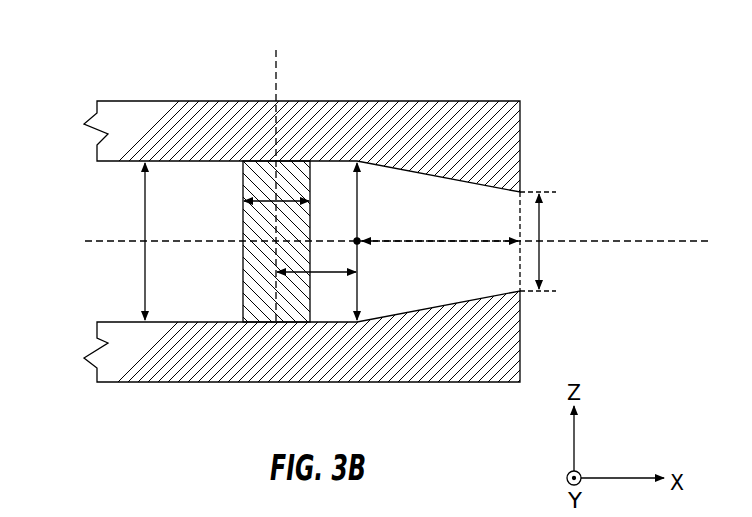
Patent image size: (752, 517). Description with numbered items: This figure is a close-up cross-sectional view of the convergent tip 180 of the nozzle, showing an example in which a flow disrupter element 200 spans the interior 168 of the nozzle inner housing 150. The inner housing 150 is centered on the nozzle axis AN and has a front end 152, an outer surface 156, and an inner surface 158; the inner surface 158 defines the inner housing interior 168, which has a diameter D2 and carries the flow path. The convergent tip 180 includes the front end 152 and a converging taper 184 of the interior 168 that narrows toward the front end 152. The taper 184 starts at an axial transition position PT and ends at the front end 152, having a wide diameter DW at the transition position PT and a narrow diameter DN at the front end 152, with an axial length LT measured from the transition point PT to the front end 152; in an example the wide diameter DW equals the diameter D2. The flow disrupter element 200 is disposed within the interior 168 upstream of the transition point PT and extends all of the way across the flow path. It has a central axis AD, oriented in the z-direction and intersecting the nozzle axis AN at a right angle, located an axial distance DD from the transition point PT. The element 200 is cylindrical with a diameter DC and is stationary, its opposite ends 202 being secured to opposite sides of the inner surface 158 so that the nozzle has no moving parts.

The inner housing 150 is at (318, 50).
The front end 152 is at (527, 128).
The outer surface 156 is at (290, 382).
The inner surface 158 is at (201, 322).
The inner housing interior 168 is at (167, 183).
The convergent tip 180 is at (519, 79).
The converging taper 184 is at (466, 300).
The flow disrupter element 200 is at (310, 172).
The opposite ends 202 is at (291, 161).
The central axis AD is at (276, 82).
The nozzle axis AN is at (620, 241).
The diameter of inner housing interior D2 is at (145, 205).
The diameter of flow disrupter element DC is at (270, 203).
The axial distance DD is at (316, 286).
The wide diameter DW is at (357, 190).
The narrow diameter DN is at (540, 232).
The axial length of taper LT is at (440, 241).
The axial transition position PT is at (360, 240).